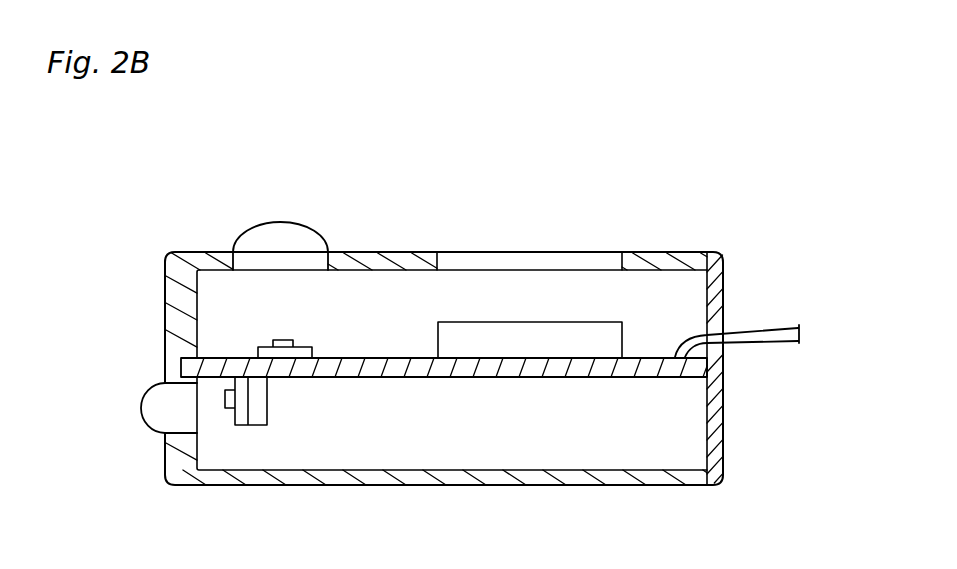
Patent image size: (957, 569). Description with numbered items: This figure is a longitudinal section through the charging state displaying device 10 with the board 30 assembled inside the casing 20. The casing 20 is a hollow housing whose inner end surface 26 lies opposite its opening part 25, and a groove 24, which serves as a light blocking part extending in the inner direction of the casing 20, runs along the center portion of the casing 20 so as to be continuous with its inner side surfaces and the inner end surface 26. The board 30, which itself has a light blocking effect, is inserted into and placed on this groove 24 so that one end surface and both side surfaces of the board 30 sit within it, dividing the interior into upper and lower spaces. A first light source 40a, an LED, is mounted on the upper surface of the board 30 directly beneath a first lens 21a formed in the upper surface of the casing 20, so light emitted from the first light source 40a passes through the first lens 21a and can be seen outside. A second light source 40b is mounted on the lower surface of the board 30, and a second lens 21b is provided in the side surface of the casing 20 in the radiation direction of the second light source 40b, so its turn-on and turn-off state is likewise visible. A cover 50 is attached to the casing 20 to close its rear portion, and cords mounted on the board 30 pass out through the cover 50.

The charging state displaying device 10 is at (578, 293).
The casing 20 is at (428, 266).
The first lens 21a is at (292, 247).
The second lens 21b is at (168, 410).
The groove 24 is at (185, 338).
The opening part 25 is at (697, 272).
The inner end surface 26 is at (193, 290).
The board 30 is at (472, 380).
The first light source 40a is at (287, 340).
The second light source 40b is at (240, 408).
The cover 50 is at (727, 420).